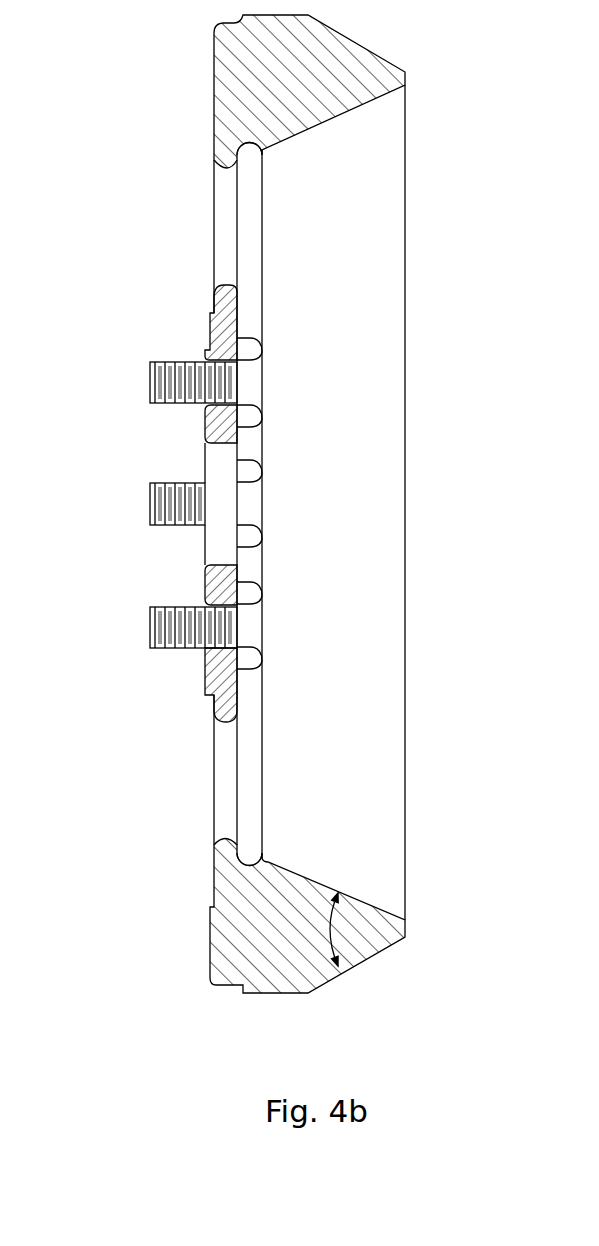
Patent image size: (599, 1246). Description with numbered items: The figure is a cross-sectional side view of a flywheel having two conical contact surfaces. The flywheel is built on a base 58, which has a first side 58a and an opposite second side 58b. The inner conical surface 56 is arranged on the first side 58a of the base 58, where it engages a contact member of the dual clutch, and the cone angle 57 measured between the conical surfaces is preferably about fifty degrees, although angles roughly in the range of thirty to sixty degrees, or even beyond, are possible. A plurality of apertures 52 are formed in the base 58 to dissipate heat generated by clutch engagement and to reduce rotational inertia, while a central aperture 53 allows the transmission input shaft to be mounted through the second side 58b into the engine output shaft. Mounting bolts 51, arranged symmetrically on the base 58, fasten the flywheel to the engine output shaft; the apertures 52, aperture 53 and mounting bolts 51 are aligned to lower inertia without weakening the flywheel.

The mounting bolts 51 is at (172, 652).
The apertures 52 is at (220, 222).
The aperture 53 is at (222, 472).
The inner conical surface 56 is at (317, 132).
The cone angle 57 is at (332, 930).
The base 58 is at (263, 738).
The first side 58a is at (262, 297).
The second side 58b is at (237, 260).